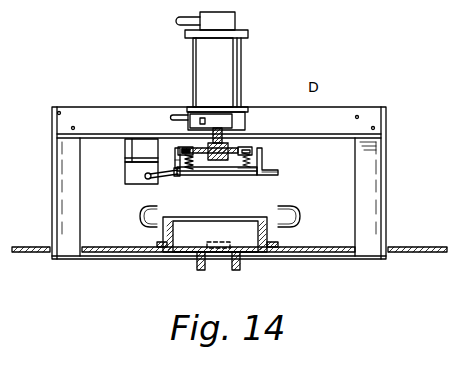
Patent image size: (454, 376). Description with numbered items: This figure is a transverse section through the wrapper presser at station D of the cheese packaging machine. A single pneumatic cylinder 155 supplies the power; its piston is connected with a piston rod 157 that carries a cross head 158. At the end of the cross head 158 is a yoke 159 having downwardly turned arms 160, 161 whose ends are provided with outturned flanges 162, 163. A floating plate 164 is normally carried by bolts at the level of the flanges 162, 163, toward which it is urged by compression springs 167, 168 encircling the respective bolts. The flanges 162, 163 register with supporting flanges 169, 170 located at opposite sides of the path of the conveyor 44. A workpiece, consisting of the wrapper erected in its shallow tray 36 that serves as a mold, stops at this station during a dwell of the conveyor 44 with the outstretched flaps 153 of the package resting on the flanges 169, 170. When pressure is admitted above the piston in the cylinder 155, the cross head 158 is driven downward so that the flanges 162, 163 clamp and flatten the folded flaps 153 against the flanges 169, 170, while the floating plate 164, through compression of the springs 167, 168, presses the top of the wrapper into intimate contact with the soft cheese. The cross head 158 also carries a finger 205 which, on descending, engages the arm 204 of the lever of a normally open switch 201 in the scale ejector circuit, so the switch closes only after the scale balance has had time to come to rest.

The tray 36 is at (245, 236).
The conveyor 44 is at (192, 257).
The outstretched flaps 153 is at (156, 218).
The cylinder 155 is at (220, 77).
The piston rod 157 is at (222, 133).
The cross head 158 is at (240, 146).
The yoke 159 is at (263, 160).
The downwardly turned arm 160 is at (268, 168).
The downwardly turned arm 161 is at (178, 163).
The outturned flange 162 is at (272, 174).
The outturned flange 163 is at (129, 159).
The floating plate 164 is at (226, 174).
The compression spring 167 is at (243, 173).
The compression spring 168 is at (208, 174).
The flange 169 is at (284, 240).
The flange 170 is at (158, 227).
The normally open switch 201 is at (128, 175).
The arm 204 is at (152, 182).
The finger 205 is at (172, 163).